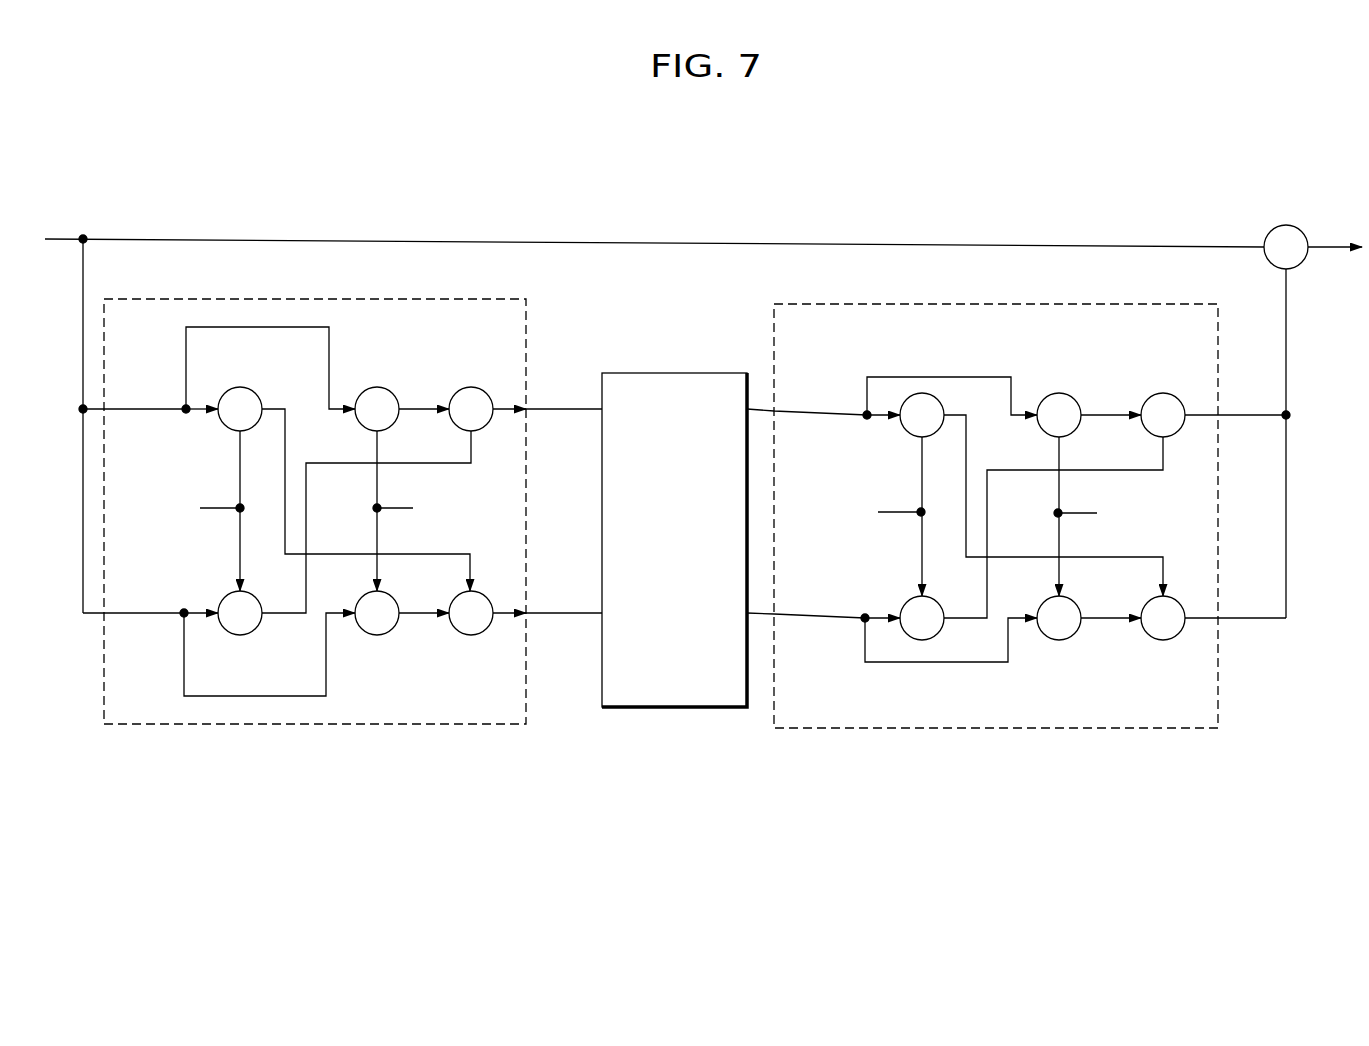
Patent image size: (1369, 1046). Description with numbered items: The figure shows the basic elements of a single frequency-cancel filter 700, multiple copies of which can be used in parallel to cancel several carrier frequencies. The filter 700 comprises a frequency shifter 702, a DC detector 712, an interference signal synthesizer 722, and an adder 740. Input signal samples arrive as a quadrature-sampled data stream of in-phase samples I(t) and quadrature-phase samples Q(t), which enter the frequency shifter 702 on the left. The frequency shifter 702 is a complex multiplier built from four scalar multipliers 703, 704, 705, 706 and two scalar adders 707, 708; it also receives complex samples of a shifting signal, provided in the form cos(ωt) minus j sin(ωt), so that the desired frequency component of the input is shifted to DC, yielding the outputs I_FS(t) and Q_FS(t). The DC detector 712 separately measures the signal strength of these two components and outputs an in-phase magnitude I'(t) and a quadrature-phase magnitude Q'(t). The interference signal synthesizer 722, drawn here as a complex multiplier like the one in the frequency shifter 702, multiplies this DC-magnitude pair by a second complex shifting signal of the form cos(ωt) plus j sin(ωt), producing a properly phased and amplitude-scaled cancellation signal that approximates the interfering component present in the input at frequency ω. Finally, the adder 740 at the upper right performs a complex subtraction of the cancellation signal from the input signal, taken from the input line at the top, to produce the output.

The frequency-cancel filter 700 is at (1062, 184).
The frequency shifter 702 is at (342, 495).
The scalar multiplier 703 is at (240, 386).
The scalar multiplier 704 is at (240, 636).
The scalar multiplier 705 is at (377, 386).
The scalar multiplier 706 is at (377, 636).
The scalar adder 707 is at (471, 386).
The scalar adder 708 is at (471, 636).
The DC detector 712 is at (676, 373).
The interference signal synthesizer 722 is at (1003, 304).
The adder 740 is at (1286, 225).